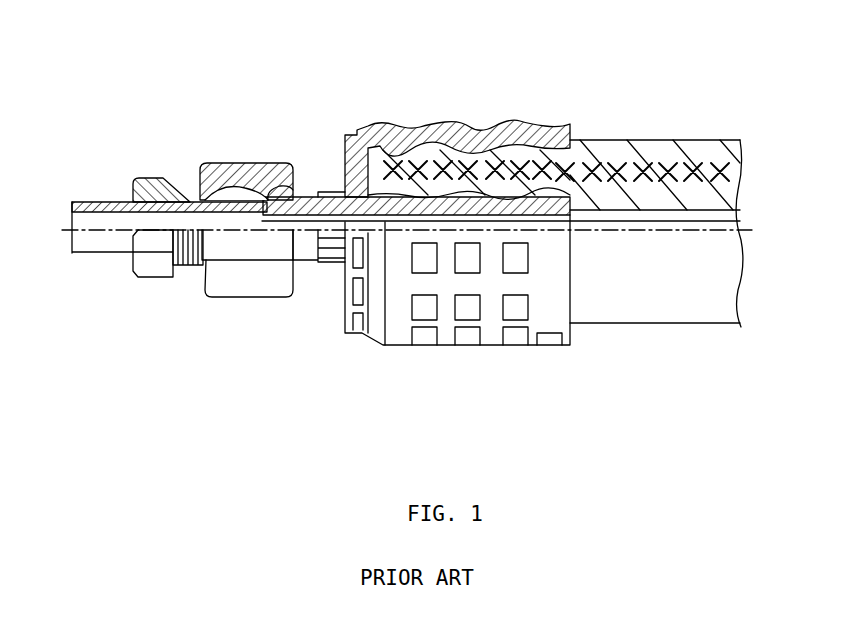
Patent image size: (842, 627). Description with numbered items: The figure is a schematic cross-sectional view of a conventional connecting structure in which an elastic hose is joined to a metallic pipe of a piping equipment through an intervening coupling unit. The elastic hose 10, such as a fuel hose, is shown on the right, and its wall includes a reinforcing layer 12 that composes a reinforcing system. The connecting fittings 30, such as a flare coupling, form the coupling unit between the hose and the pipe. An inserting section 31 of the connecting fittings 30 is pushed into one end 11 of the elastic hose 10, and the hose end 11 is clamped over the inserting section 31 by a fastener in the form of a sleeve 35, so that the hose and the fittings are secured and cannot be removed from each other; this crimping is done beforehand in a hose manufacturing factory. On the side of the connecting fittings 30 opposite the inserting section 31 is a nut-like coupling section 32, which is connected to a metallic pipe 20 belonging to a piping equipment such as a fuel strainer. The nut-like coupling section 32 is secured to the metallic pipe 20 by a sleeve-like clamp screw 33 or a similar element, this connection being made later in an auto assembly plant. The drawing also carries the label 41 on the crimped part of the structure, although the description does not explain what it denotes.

The elastic hose 10 is at (638, 134).
The one end of elastic hose 11 is at (462, 137).
The reinforcing layer 12 is at (662, 166).
The metallic pipe 20 is at (117, 198).
The connecting fittings 30 is at (225, 298).
The inserting section 31 is at (580, 140).
The nut-like coupling section 32 is at (238, 168).
The sleeve-like clamp screw 33 is at (155, 174).
The sleeve 35 is at (412, 122).
The crimp slot 41 is at (507, 349).